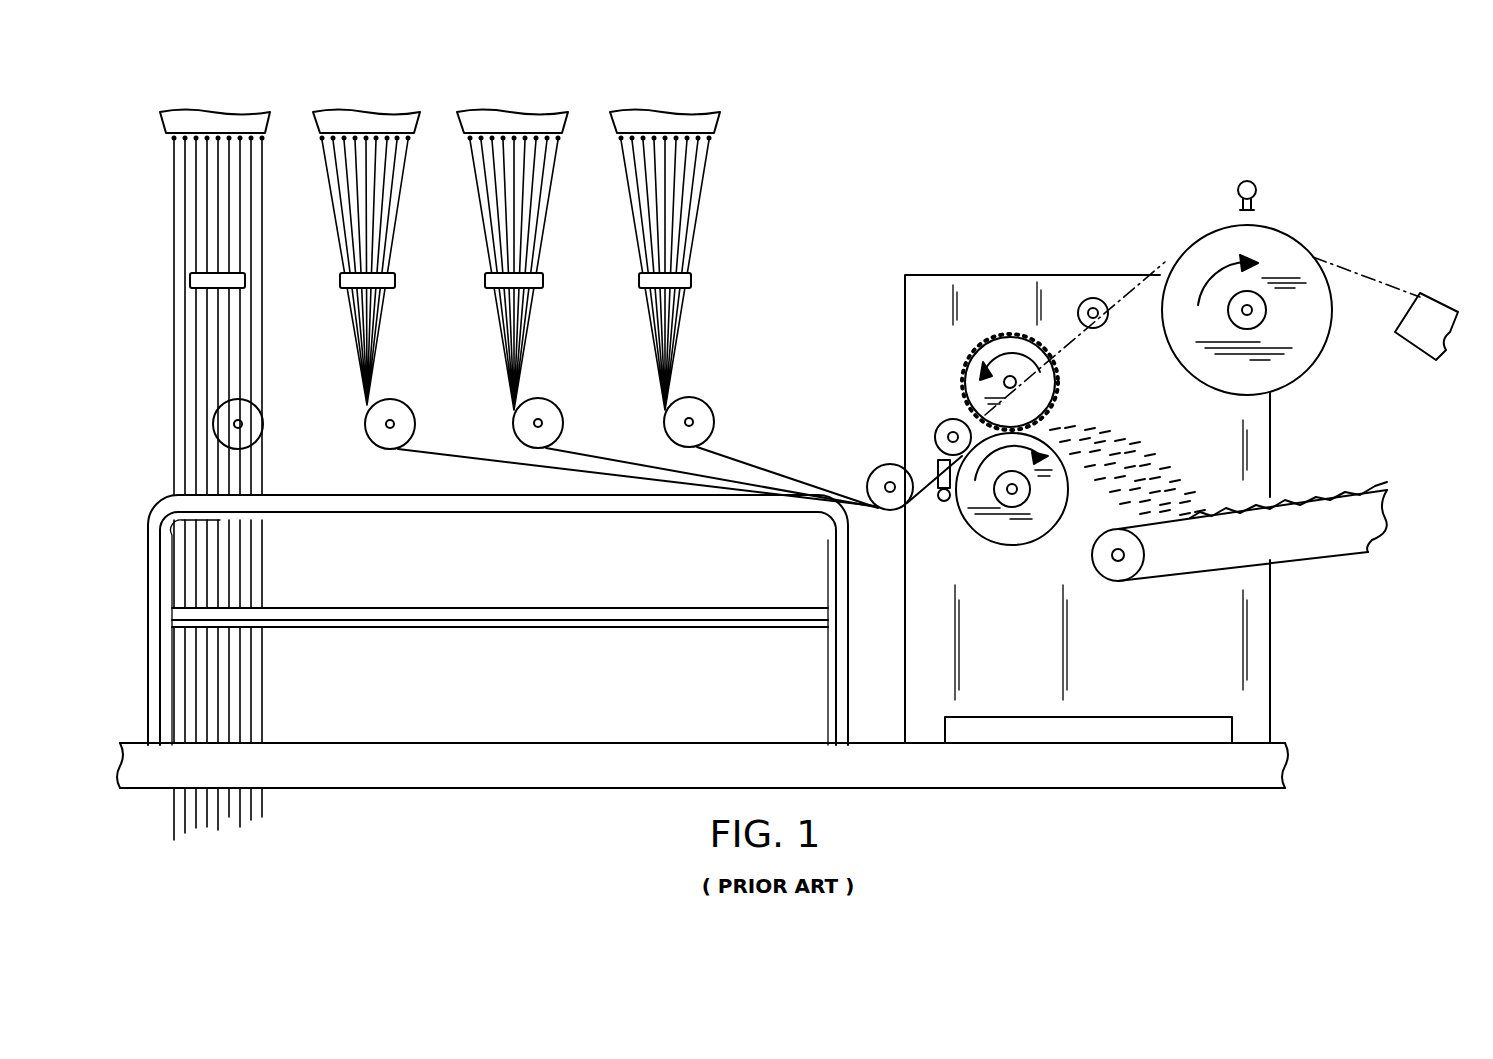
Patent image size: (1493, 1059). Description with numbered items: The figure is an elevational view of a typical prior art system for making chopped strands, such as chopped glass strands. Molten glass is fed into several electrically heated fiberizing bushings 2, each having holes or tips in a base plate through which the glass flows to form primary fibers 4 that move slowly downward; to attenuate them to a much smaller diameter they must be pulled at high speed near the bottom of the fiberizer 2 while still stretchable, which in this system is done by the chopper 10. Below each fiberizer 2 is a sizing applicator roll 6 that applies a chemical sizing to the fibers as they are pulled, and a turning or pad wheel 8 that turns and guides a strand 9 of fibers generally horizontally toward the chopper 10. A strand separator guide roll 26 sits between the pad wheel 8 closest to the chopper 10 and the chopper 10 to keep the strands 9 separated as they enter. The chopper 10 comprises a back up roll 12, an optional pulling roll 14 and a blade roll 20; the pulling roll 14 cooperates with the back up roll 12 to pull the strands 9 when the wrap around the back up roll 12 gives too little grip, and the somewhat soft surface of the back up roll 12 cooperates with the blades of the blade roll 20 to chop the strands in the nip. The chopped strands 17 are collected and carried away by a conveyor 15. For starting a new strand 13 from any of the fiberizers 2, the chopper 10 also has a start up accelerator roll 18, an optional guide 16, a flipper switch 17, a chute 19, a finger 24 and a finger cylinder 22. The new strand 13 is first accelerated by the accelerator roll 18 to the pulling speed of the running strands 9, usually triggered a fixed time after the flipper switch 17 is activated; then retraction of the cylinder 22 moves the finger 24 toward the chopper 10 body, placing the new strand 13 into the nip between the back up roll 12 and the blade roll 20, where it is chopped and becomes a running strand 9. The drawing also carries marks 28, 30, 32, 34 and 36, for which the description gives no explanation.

The fiberizing bushing 2 is at (268, 118).
The primary fibers 4 is at (243, 238).
The sizing applicator roll 6 is at (246, 283).
The pad wheel 8 is at (262, 421).
The strand 9 is at (603, 458).
The chopper 10 is at (905, 300).
The back up roll 12 is at (1012, 546).
The new strand 13 is at (1072, 346).
The pulling roll 14 is at (944, 421).
The conveyor 15 is at (1117, 578).
The guide 16 is at (1087, 298).
The flipper switch 17 is at (1238, 182).
The start up accelerator roll 18 is at (1272, 250).
The chute 19 is at (1428, 312).
The blade roll 20 is at (1040, 393).
The finger cylinder 22 is at (944, 504).
The finger 24 is at (932, 465).
The strand separator guide roll 26 is at (880, 470).
The table 28 is at (494, 520).
The floor 30 is at (597, 778).
The strand ends 32 is at (515, 854).
The converging strands 34 is at (398, 232).
The fibers 36 is at (1145, 470).